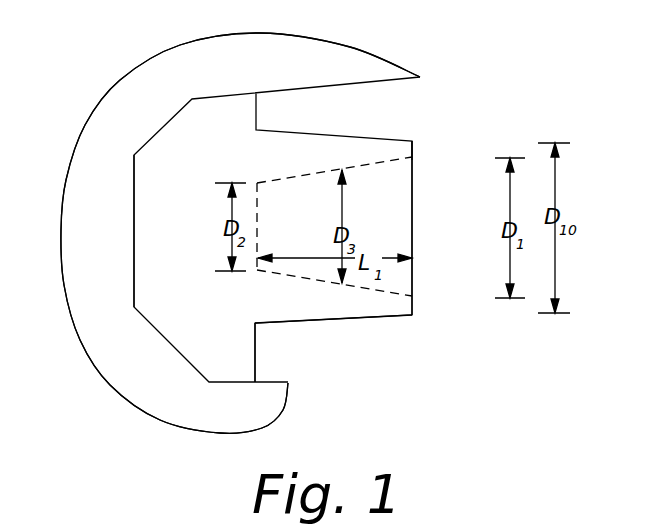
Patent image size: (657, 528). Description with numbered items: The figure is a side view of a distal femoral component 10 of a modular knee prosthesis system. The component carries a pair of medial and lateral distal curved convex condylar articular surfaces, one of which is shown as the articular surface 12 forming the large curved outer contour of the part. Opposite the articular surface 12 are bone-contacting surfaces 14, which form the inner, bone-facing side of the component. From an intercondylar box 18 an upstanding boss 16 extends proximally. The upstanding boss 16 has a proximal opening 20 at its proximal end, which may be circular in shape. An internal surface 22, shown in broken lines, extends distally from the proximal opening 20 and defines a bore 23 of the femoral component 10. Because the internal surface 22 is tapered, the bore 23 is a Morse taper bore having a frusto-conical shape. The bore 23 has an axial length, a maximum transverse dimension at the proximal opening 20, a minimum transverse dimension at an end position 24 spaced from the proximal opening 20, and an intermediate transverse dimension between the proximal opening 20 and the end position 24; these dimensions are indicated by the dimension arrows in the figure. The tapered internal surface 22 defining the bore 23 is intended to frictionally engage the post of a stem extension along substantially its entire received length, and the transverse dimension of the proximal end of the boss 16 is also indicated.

The distal femoral component 10 is at (385, 70).
The distal curved convex condylar articular surface 12 is at (82, 352).
The bone-contacting surfaces 14 is at (134, 238).
The upstanding boss 16 is at (392, 316).
The intercondylar box 18 is at (255, 362).
The proximal opening 20 is at (412, 160).
The internal surface 22 is at (296, 176).
The bore 23 is at (412, 200).
The end position 24 is at (257, 272).